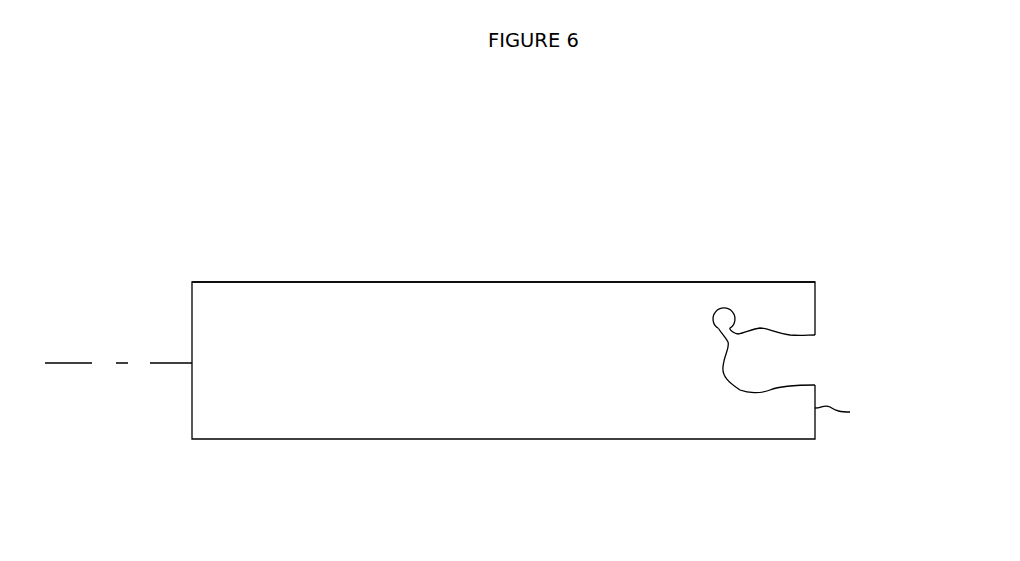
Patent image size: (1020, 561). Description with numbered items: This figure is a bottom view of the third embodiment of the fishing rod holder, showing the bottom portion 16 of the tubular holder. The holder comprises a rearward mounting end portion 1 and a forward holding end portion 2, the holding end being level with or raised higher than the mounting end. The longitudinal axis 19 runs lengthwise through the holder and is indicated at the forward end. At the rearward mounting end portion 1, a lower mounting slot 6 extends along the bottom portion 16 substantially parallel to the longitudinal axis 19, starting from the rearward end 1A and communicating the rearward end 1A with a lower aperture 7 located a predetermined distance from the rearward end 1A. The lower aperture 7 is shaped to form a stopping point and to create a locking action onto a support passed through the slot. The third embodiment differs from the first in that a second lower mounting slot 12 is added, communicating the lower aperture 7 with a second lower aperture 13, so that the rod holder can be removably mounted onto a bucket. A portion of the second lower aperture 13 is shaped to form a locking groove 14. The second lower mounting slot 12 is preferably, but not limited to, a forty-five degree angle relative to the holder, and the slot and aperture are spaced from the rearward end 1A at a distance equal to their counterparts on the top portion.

The rearward mounting end portion 1 is at (791, 452).
The rearward end 1A is at (849, 414).
The forward holding end portion 2 is at (225, 268).
The lower mounting slot 6 is at (820, 362).
The lower aperture 7 is at (764, 345).
The second lower mounting slot 12 is at (737, 355).
The second lower aperture 13 is at (700, 322).
The locking groove 14 is at (735, 295).
The bottom portion 16 is at (418, 420).
The longitudinal axis 19 is at (73, 363).